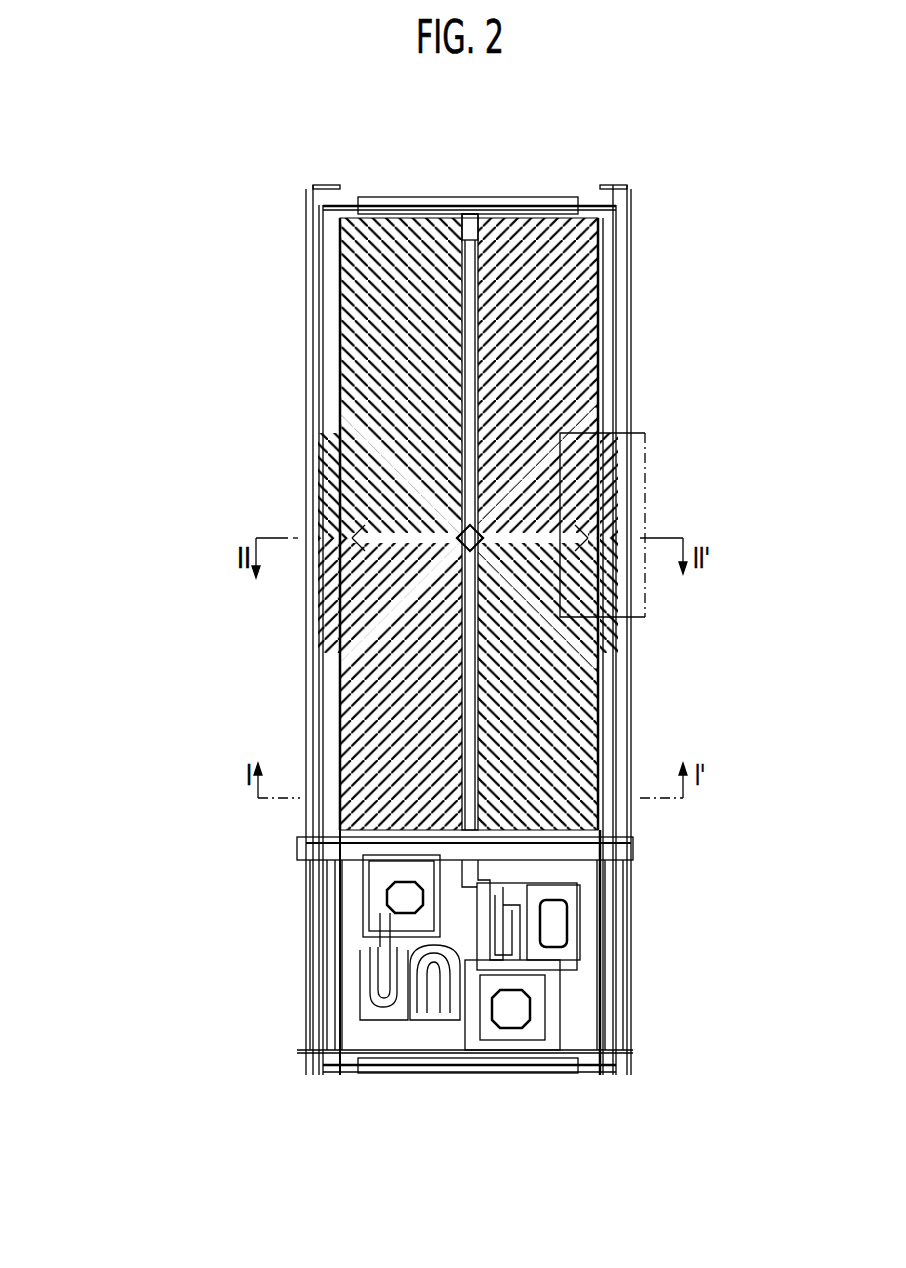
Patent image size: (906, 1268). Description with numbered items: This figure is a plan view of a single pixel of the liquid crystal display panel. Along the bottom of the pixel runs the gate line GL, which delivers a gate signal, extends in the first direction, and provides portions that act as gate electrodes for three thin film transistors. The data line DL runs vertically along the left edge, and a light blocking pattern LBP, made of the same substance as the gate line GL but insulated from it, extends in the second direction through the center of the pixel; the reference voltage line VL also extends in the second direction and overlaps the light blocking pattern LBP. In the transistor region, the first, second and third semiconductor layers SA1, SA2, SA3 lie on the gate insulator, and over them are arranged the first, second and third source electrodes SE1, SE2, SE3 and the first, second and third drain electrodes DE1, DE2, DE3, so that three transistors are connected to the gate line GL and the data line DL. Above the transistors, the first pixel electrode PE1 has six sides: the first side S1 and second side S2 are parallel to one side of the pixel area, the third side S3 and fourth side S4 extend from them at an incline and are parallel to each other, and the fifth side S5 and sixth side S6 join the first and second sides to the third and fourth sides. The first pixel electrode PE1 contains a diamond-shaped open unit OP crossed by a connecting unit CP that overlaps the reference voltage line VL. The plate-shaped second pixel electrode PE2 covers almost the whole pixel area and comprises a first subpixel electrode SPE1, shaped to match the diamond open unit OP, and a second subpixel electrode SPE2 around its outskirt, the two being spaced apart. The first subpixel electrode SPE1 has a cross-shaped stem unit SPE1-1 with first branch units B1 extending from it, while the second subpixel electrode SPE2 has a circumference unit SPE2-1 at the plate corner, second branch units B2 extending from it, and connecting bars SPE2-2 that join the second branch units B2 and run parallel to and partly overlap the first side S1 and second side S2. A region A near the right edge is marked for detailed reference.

The reference voltage line VL is at (400, 197).
The connecting unit CP is at (466, 345).
The data line DL is at (313, 318).
The light blocking pattern LBP is at (480, 297).
The third side S3 is at (520, 343).
The first pixel electrode PE1 is at (553, 402).
The fifth side S5 is at (352, 412).
The region A is at (648, 488).
The second side S2 is at (355, 516).
The stem unit SPE1-1 is at (345, 530).
The first side S1 is at (595, 528).
The first subpixel electrode SPE1 is at (302, 665).
The first branch units B1 is at (355, 548).
The second pixel electrode PE2 is at (355, 665).
The connecting bars SPE2-2 is at (345, 605).
The open unit OP is at (505, 620).
The sixth side S6 is at (565, 655).
The second subpixel electrode SPE2 is at (379, 684).
The circumference unit SPE2-1 is at (335, 668).
The second branch units B2 is at (365, 705).
The fourth side S4 is at (350, 735).
The first drain electrode DE1 is at (377, 905).
The third drain electrode DE3 is at (540, 905).
The third semiconductor layer SA3 is at (515, 935).
The third source electrode SE3 is at (517, 955).
The first semiconductor layer SA1 is at (373, 972).
The gate line GL is at (627, 976).
The first source electrode SE1 is at (380, 988).
The second source electrode SE2 is at (410, 990).
The second semiconductor layer SA2 is at (420, 990).
The second drain electrode DE2 is at (433, 995).